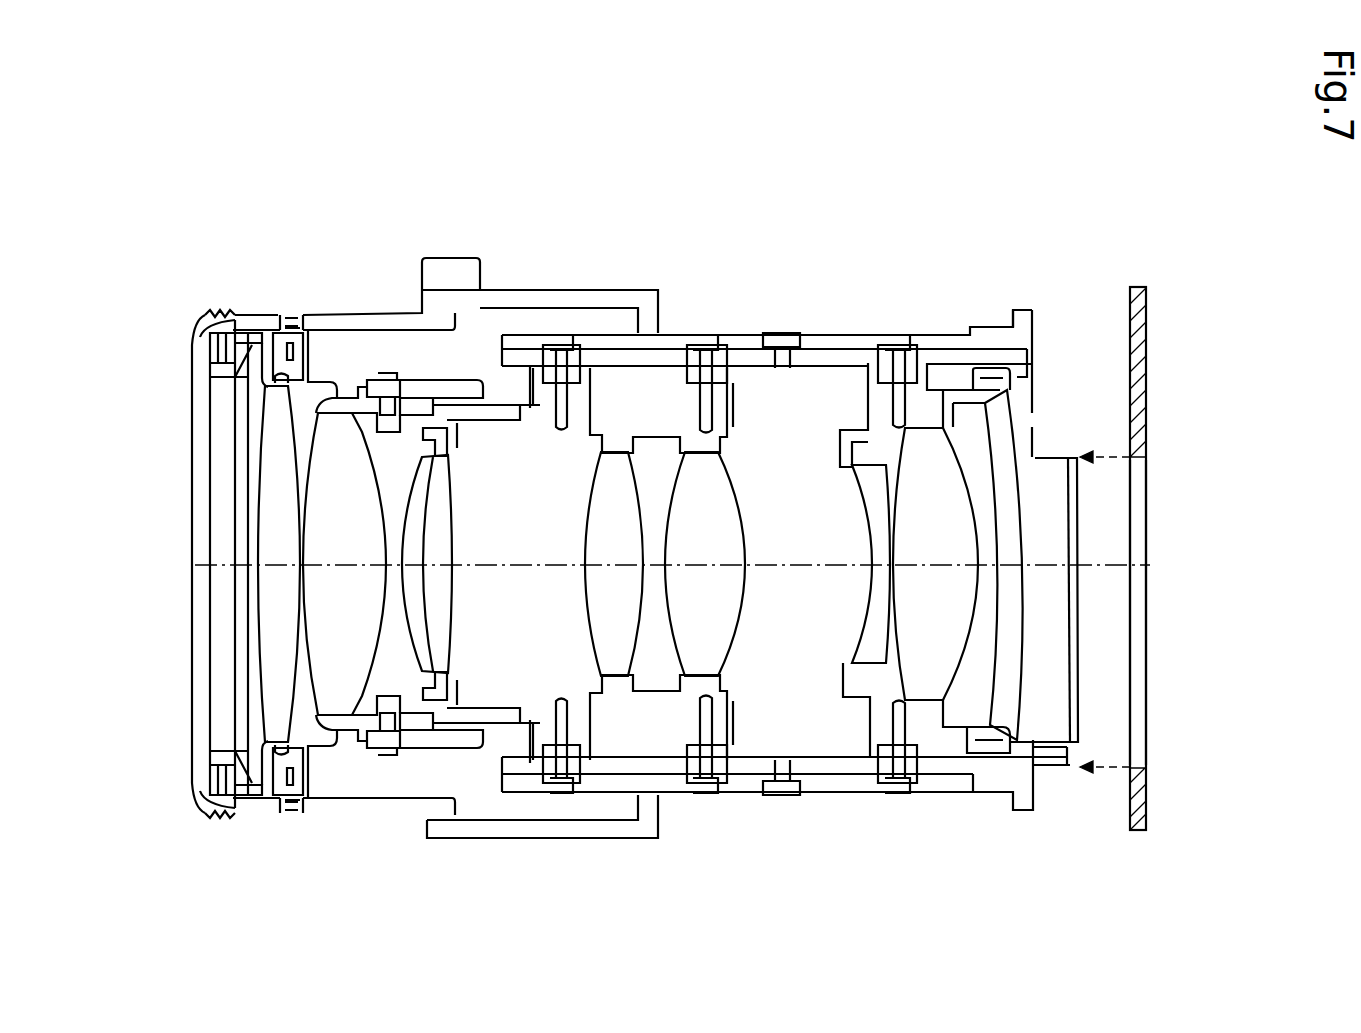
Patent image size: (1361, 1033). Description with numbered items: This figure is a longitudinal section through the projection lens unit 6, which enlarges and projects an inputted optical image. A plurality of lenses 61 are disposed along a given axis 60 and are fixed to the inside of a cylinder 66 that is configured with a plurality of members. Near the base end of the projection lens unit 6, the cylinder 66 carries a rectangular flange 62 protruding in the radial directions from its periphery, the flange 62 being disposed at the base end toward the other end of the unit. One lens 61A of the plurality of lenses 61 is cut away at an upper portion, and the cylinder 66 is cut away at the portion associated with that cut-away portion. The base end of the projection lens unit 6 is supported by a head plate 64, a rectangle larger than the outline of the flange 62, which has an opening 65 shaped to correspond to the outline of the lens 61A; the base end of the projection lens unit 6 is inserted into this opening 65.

The projection lens unit 6 is at (395, 250).
The axis 60 is at (228, 605).
The lenses 61 is at (420, 643).
The lens 61A is at (1048, 688).
The flange 62 is at (1027, 305).
The head plate 64 is at (1148, 334).
The opening 65 is at (1148, 565).
The cylinder 66 is at (742, 333).